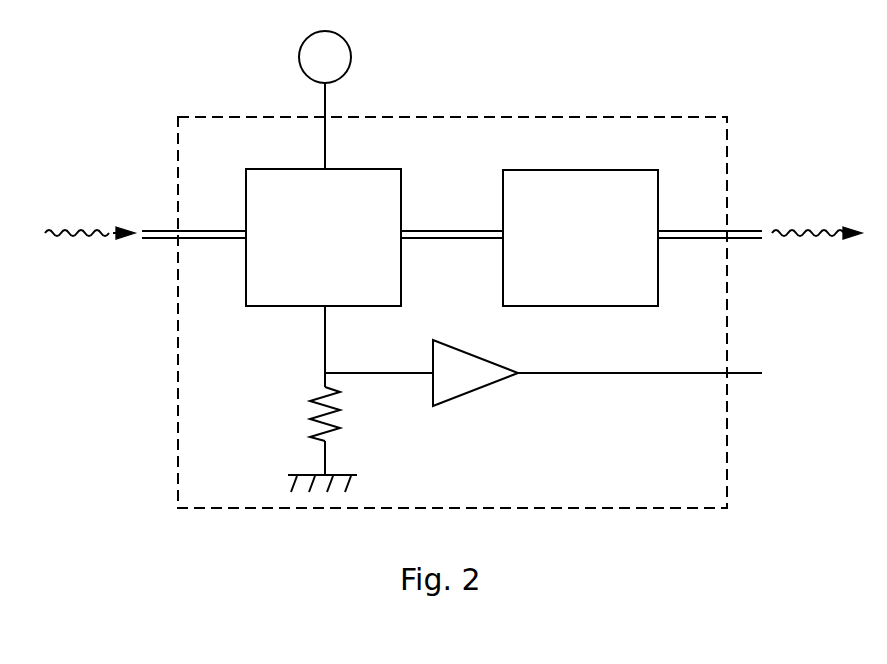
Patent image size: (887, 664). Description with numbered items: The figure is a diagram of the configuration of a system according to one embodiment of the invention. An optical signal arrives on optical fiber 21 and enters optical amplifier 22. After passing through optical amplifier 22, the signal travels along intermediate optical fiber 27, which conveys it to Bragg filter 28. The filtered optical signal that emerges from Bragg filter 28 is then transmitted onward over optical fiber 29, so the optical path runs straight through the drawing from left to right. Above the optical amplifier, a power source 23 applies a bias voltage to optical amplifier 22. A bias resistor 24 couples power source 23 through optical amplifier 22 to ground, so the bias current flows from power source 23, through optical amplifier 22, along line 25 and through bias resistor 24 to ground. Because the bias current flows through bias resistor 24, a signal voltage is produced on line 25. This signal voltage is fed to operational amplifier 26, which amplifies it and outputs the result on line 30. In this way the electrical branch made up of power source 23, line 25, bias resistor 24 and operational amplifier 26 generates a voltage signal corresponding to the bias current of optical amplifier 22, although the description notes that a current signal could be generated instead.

The optical fiber 21 is at (228, 240).
The optical amplifier 22 is at (355, 169).
The power source 23 is at (351, 58).
The bias resistor 24 is at (295, 411).
The line 25 is at (322, 323).
The operational amplifier 26 is at (468, 393).
The intermediate optical fiber 27 is at (470, 240).
The Bragg filter 28 is at (620, 170).
The optical fiber 29 is at (672, 240).
The line 30 is at (658, 373).